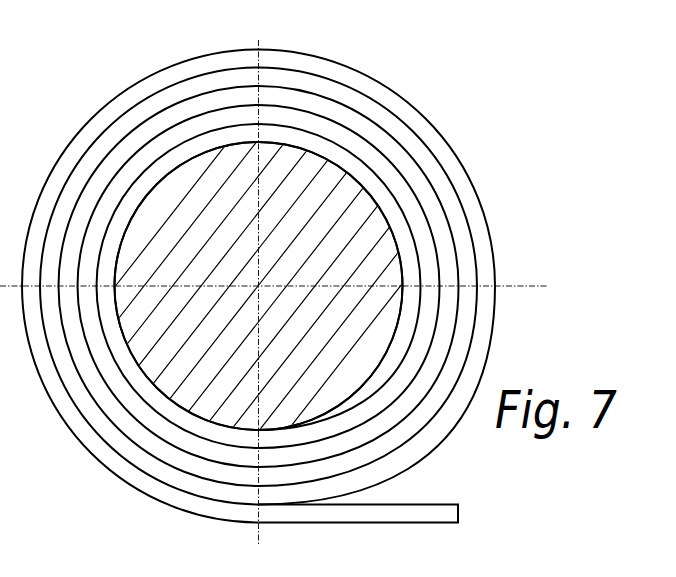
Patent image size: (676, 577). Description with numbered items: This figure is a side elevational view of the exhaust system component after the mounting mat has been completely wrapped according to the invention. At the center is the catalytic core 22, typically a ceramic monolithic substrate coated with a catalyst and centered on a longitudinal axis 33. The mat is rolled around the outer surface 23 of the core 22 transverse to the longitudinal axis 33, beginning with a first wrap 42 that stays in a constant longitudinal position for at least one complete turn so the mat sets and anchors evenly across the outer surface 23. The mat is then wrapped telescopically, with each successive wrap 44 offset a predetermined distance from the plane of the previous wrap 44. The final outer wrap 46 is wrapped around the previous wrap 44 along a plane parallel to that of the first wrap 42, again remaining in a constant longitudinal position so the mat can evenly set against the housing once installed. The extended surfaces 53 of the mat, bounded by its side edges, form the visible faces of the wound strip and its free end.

The catalytic core 22 is at (360, 213).
The outer surface 23 is at (340, 192).
The longitudinal axis 33 is at (259, 286).
The first wrap 42 is at (293, 140).
The successive wrap 44 is at (202, 125).
The final outer wrap 46 is at (139, 88).
The extended surfaces 53 is at (443, 504).